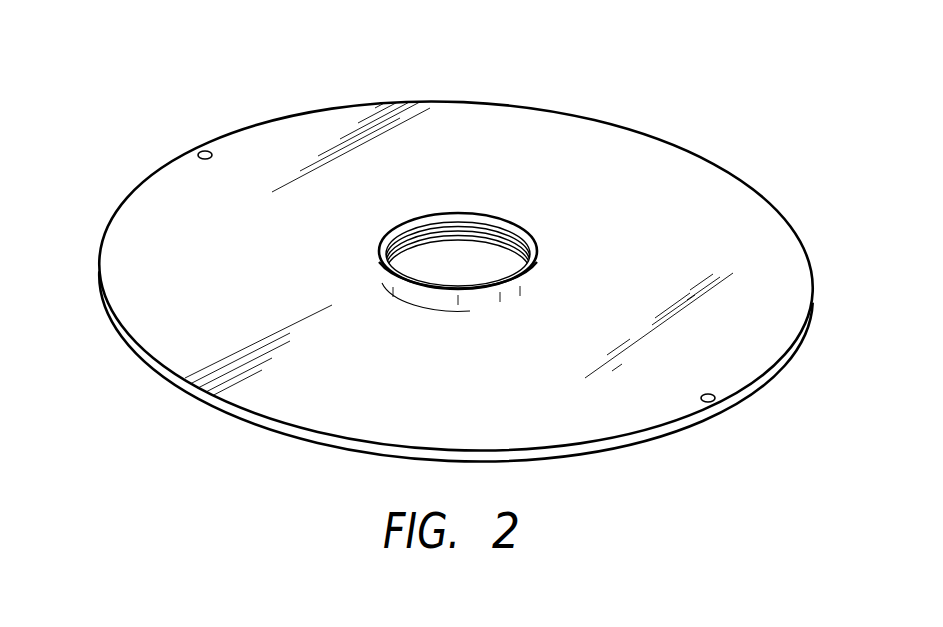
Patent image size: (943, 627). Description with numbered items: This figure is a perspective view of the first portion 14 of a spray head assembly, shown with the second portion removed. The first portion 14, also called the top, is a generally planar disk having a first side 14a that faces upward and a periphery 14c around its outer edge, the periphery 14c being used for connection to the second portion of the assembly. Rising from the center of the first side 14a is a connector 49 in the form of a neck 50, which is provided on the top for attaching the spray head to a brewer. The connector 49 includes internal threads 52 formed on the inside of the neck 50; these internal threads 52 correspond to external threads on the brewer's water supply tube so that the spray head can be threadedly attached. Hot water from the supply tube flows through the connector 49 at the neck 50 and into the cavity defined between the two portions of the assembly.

The first portion 14 is at (676, 140).
The first side 14a is at (750, 358).
The periphery 14c is at (181, 386).
The connector 49 is at (497, 212).
The neck 50 is at (522, 286).
The internal threads 52 is at (456, 221).